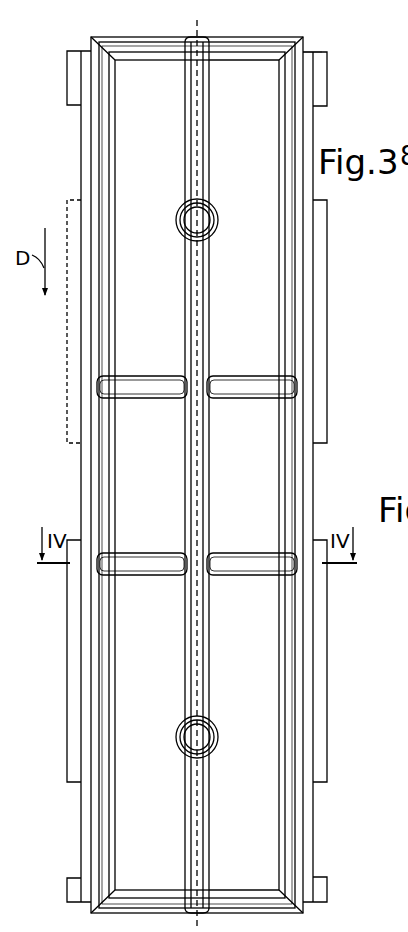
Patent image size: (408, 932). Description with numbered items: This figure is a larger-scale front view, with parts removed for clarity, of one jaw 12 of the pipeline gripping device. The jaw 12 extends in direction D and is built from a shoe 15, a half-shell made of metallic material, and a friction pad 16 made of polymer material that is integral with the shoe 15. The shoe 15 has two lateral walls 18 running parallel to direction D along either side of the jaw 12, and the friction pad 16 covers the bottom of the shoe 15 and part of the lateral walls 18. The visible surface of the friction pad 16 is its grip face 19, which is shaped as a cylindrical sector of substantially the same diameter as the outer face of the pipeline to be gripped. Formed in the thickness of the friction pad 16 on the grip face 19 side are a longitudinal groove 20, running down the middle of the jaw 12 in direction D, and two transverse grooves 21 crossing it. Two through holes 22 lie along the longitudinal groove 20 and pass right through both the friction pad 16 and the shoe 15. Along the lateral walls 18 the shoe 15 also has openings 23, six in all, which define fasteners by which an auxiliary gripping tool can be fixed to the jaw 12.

The jaw 12 is at (330, 52).
The shoe 15 is at (328, 352).
The friction pad 16 is at (250, 338).
The lateral walls 18 is at (72, 677).
The grip face 19 is at (232, 475).
The longitudinal groove 20 is at (200, 677).
The transverse grooves 21 is at (135, 383).
The through holes 22 is at (185, 212).
The openings 23 is at (75, 173).